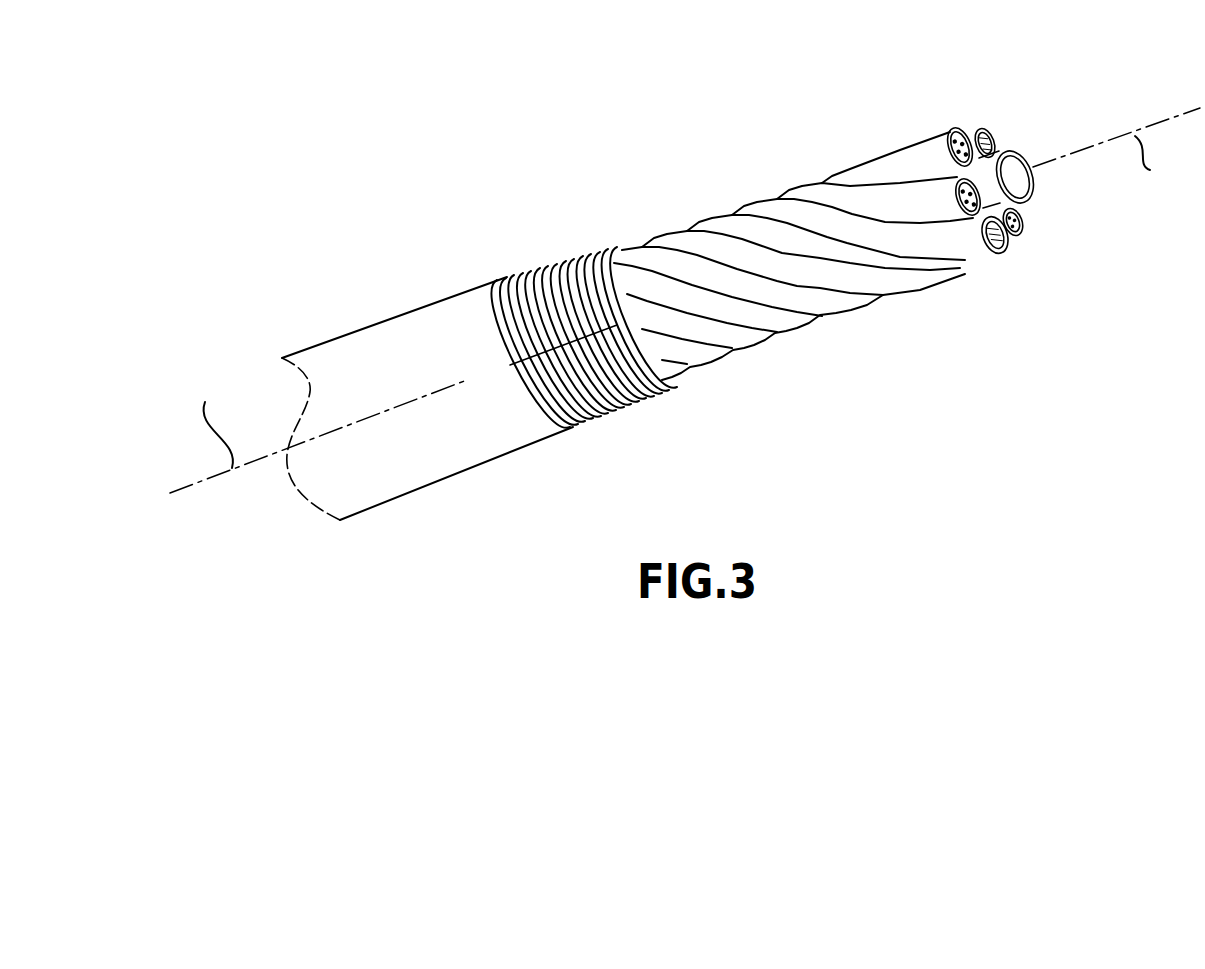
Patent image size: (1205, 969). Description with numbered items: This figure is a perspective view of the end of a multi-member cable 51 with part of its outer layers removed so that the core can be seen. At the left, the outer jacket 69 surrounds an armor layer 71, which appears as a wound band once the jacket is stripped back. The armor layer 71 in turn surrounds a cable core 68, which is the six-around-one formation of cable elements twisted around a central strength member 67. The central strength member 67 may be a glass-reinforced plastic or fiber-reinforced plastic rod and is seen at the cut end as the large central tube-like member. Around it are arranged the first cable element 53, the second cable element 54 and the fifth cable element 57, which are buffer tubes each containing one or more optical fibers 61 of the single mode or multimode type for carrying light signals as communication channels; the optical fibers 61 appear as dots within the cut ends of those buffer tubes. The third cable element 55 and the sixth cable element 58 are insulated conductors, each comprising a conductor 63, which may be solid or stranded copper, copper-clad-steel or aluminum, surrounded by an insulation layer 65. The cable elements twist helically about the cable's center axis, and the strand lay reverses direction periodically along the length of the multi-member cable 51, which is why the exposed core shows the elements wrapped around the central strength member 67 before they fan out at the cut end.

The multi-member cable 51 is at (525, 200).
The first cable element 53 is at (800, 192).
The second cable element 54 is at (887, 166).
The third cable element 55 is at (984, 128).
The fifth cable element 57 is at (1013, 242).
The sixth cable element 58 is at (962, 248).
The optical fibers 61 is at (957, 125).
The conductors 63 is at (1000, 249).
The insulation layer 65 is at (988, 251).
The central strength member 67 is at (1015, 168).
The cable core 68 is at (706, 188).
The outer jacket 69 is at (401, 346).
The armor layer 71 is at (561, 269).